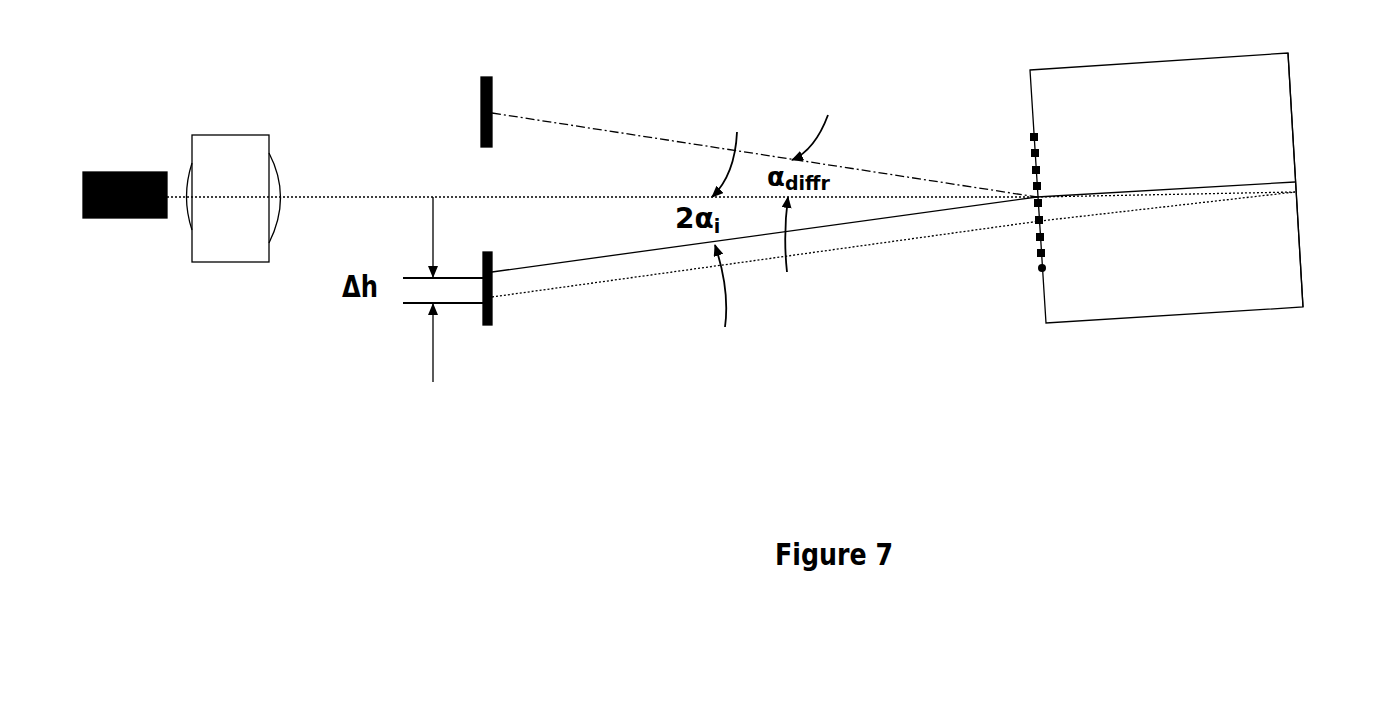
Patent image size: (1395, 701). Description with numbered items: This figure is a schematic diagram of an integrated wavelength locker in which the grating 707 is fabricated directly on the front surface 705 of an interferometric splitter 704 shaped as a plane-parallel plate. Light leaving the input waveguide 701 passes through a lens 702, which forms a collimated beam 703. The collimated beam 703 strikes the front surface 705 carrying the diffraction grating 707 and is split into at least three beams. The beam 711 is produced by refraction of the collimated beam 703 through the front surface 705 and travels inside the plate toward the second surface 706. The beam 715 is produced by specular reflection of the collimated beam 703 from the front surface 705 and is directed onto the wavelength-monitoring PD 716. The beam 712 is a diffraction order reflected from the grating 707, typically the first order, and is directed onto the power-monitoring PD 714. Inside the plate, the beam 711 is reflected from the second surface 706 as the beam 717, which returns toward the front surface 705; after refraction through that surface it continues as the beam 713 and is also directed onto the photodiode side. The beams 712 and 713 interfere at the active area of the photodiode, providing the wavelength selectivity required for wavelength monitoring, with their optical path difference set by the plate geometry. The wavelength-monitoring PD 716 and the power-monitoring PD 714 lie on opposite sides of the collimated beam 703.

The input waveguide 701 is at (125, 239).
The lens 702 is at (234, 241).
The collimated beam 703 is at (602, 168).
The interferometric splitter 704 is at (1166, 169).
The front surface 705 is at (1116, 243).
The second surface 706 is at (1332, 180).
The grating 707 is at (1017, 157).
The beam 711 is at (1175, 262).
The beam 712 is at (764, 130).
The beam 713 is at (893, 260).
The power-monitoring PD 714 is at (518, 90).
The beam 715 is at (764, 234).
The wavelength-monitoring PD 716 is at (514, 314).
The beam 717 is at (1242, 190).